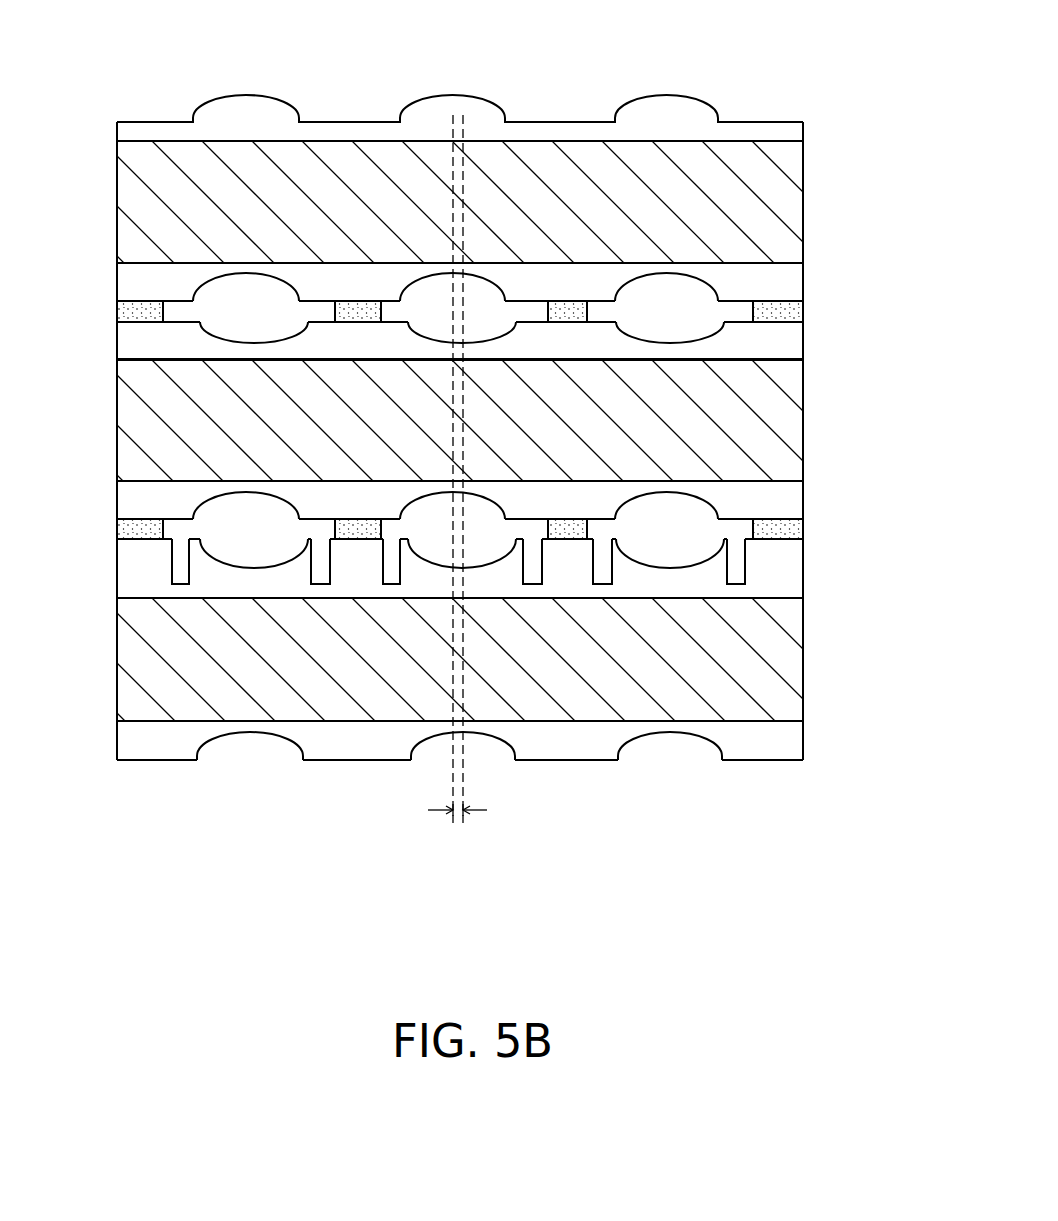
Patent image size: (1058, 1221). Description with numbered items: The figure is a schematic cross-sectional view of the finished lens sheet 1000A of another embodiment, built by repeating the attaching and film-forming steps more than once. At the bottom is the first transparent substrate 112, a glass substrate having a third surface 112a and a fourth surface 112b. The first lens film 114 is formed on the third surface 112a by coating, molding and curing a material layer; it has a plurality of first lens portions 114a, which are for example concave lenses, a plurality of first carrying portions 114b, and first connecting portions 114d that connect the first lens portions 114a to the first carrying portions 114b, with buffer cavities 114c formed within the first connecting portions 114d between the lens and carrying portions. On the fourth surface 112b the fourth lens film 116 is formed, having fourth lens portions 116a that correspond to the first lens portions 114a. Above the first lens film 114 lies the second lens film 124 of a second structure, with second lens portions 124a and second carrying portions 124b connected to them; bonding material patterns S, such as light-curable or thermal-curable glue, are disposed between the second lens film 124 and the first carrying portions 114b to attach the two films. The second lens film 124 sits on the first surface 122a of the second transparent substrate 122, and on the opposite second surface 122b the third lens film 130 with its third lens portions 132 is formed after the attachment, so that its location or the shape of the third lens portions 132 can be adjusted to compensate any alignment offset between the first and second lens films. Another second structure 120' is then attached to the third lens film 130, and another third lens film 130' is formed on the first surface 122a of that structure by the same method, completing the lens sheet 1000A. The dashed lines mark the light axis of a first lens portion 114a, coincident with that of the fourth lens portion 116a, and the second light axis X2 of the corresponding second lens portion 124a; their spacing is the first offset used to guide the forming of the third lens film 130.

The lens sheet 1000A is at (833, 908).
The another second structure 120' is at (442, 185).
The another third lens film 130' is at (492, 102).
The second transparent substrate 122 is at (183, 170).
The first surface 122a is at (764, 150).
The second surface 122b is at (764, 258).
The second lens film 124 is at (143, 283).
The second lens portions 124a is at (431, 488).
The second carrying portions 124b is at (386, 499).
The bonding material patterns S is at (358, 518).
The third lens film 130 is at (498, 333).
The third lens portions 132 is at (685, 343).
The first lens film 114 is at (790, 582).
The first lens portions 114a is at (482, 580).
The first carrying portions 114b is at (533, 593).
The buffer cavities 114c is at (532, 553).
The first connecting portions 114d is at (580, 550).
The first transparent substrate 112 is at (775, 668).
The third surface 112a is at (763, 606).
The fourth surface 112b is at (753, 718).
The fourth lens film 116 is at (787, 750).
The fourth lens portions 116a is at (675, 725).
The second light axis X2 is at (447, 782).